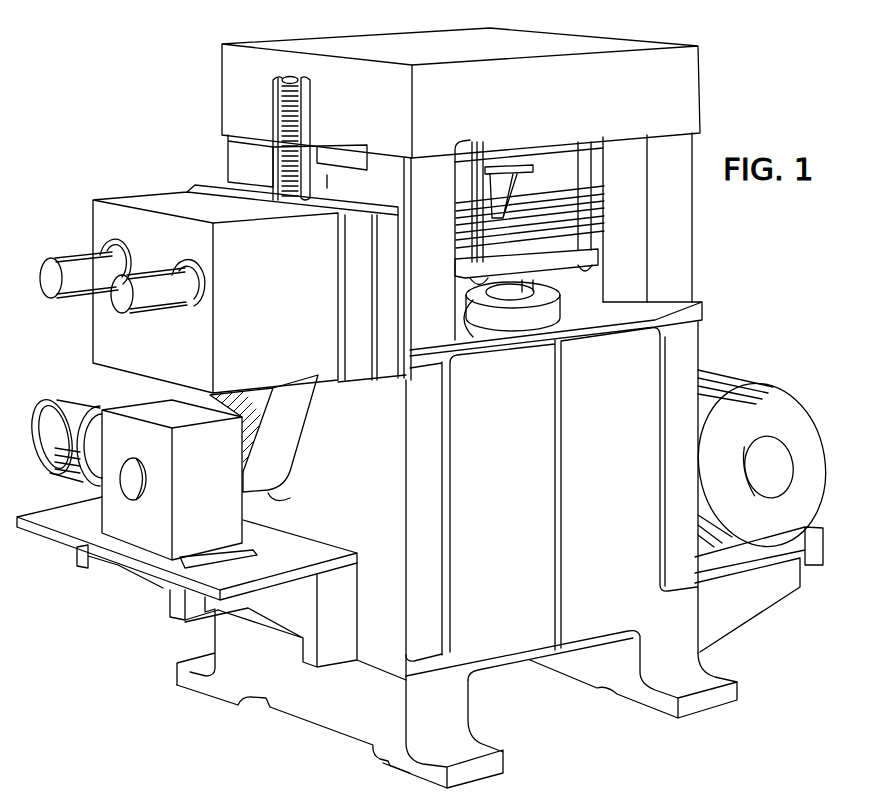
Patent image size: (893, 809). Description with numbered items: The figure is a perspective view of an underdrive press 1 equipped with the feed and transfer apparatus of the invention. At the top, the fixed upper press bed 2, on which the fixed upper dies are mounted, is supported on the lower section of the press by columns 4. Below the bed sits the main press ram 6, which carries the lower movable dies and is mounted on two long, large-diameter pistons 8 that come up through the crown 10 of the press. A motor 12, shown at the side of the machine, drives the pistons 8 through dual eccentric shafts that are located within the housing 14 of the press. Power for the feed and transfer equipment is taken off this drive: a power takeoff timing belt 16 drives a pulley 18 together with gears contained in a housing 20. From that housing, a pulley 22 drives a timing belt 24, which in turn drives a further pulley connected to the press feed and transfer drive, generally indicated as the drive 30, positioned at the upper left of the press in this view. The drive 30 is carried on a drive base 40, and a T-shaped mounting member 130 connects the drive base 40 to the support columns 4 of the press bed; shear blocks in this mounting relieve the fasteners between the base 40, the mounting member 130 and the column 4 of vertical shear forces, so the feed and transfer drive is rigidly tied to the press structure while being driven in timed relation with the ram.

The underdrive press 1 is at (752, 655).
The fixed upper press bed 2 is at (668, 90).
The columns 4 is at (440, 239).
The main press ram 6 is at (538, 243).
The pistons 8 is at (515, 292).
The crown 10 is at (612, 324).
The motor 12 is at (806, 437).
The housing 14 is at (678, 395).
The power takeoff timing belt 16 is at (56, 420).
The pulley 18 is at (43, 435).
The housing 20 is at (112, 498).
The pulley 22 is at (272, 500).
The timing belt 24 is at (285, 428).
The press feed and transfer drive 30 is at (74, 234).
The drive base 40 is at (278, 339).
The T-shaped mounting member 130 is at (363, 362).